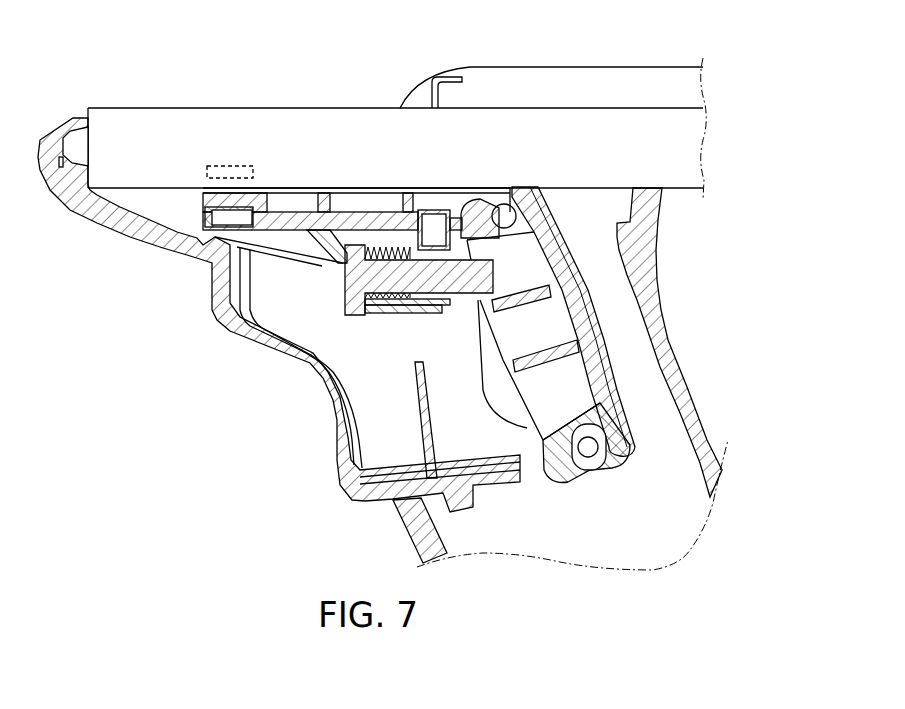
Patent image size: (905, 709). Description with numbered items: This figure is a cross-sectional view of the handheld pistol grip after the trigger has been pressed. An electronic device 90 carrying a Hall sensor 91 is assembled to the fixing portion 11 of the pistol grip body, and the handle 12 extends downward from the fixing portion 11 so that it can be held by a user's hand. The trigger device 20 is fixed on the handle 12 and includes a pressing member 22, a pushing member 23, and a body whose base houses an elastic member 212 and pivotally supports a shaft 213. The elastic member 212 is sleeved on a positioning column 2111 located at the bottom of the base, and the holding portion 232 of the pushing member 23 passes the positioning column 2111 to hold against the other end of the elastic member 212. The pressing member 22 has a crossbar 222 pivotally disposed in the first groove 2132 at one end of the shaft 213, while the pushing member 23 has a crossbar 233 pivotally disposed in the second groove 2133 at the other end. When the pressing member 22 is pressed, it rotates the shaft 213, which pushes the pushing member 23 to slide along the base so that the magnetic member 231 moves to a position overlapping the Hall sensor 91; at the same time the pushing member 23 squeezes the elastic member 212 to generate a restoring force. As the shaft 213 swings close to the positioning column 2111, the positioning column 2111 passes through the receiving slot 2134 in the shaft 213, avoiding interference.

The fixing portion 11 is at (70, 120).
The electronic device 90 is at (174, 136).
The Hall sensor 91 is at (219, 166).
The magnetic member 231 is at (282, 194).
The pushing member 23 is at (322, 214).
The elastic member 212 is at (383, 287).
The holding portion 232 is at (432, 238).
The crossbar 233 is at (487, 212).
The second groove 2133 is at (508, 204).
The receiving slot 2134 is at (540, 273).
The positioning column 2111 is at (290, 353).
The pressing member 22 is at (318, 374).
The trigger device 20 is at (239, 423).
The handle 12 is at (405, 528).
The first groove 2132 is at (565, 473).
The crossbar 222 is at (592, 456).
The shaft 213 is at (643, 455).